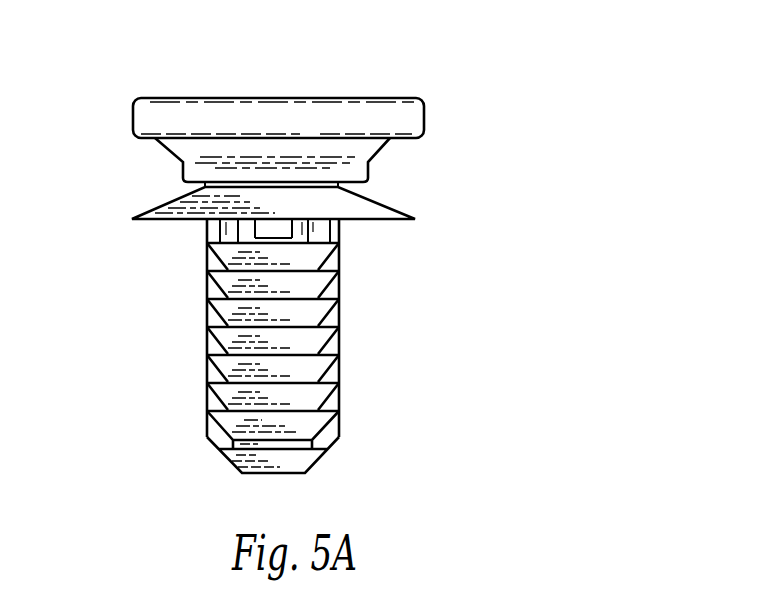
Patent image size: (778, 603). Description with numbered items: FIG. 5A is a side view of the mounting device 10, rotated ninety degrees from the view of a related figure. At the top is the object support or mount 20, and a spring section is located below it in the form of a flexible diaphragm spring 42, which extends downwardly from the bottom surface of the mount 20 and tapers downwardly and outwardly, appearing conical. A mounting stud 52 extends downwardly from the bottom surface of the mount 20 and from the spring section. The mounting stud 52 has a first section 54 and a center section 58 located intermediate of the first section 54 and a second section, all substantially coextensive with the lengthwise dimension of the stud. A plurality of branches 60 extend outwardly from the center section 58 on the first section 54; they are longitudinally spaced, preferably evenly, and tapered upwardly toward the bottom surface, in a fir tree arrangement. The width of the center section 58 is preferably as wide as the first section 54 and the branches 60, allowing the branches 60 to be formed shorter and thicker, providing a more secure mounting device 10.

The mounting device 10 is at (420, 75).
The mount 20 is at (157, 80).
The diaphragm spring 42 is at (177, 203).
The mounting stud 52 is at (341, 256).
The branches 60 is at (208, 338).
The first section 54 is at (208, 433).
The center section 58 is at (335, 445).